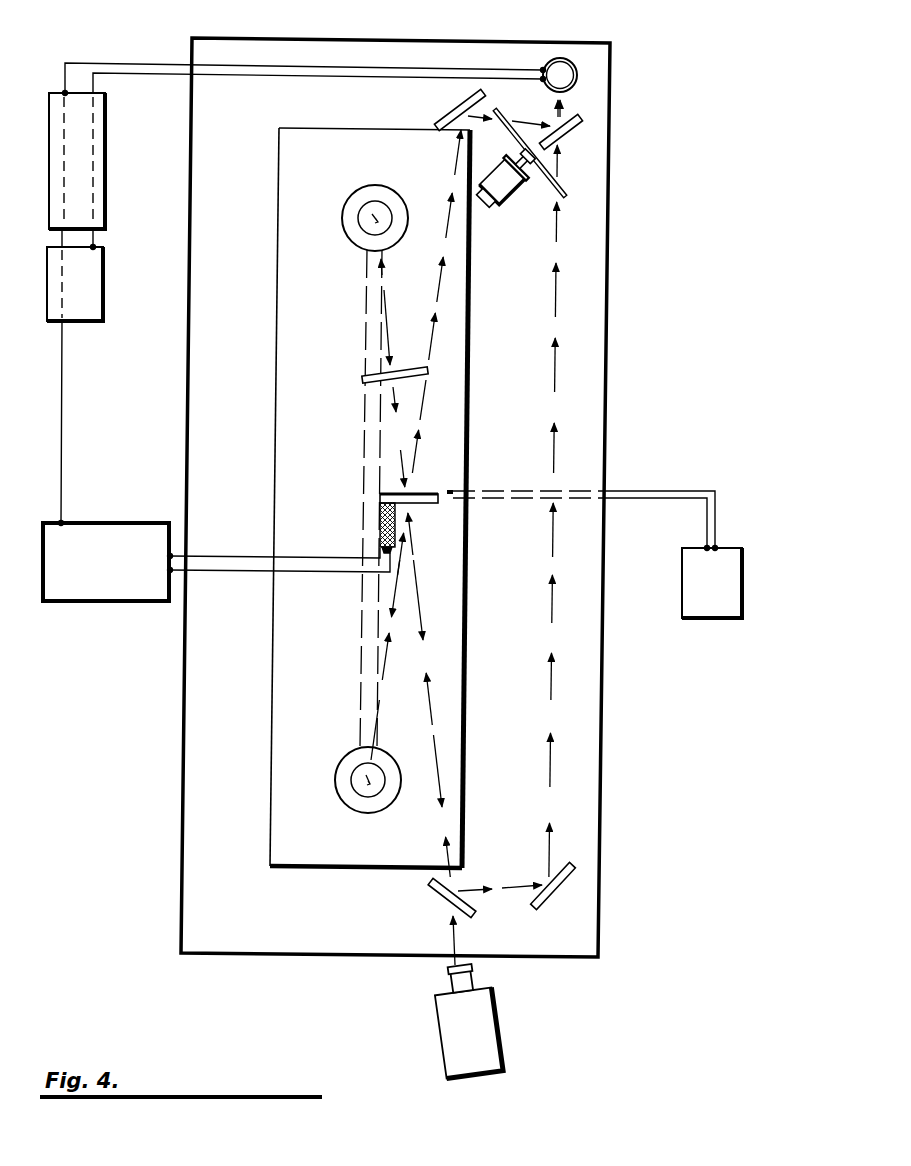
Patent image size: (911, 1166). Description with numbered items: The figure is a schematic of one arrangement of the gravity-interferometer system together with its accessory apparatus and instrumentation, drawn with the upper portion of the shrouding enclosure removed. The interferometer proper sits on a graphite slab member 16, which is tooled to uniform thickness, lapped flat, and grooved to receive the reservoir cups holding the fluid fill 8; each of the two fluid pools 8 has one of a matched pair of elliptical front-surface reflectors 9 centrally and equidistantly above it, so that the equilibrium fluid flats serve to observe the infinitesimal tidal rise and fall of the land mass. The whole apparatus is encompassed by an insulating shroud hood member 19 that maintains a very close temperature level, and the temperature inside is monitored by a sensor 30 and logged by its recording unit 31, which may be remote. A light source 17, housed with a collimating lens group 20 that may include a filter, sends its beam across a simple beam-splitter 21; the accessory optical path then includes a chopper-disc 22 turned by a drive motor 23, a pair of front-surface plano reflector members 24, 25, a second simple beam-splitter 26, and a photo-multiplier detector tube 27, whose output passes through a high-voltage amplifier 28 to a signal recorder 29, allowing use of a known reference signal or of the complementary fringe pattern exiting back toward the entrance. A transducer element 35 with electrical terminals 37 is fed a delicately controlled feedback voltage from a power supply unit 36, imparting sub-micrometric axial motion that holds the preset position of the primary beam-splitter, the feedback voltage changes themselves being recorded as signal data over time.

The fluid fill 8 is at (350, 798).
The front-surface reflectors 9 is at (372, 220).
The graphite slab member 16 is at (464, 735).
The light source 17 is at (456, 938).
The insulating shroud hood member 19 is at (181, 803).
The collimating lens group 20 is at (448, 985).
The simple beam-splitter 21 is at (442, 897).
The chopper-disc 22 is at (566, 197).
The drive motor 23 is at (513, 188).
The front-surface plano reflector member 24 is at (549, 899).
The front-surface plano reflector member 25 is at (447, 110).
The second simple beam-splitter 26 is at (573, 130).
The photo-multiplier detector tube 27 is at (556, 58).
The amplifier 28 is at (108, 147).
The signal recorder 29 is at (106, 283).
The sensor 30 is at (450, 490).
The recording unit 31 is at (745, 580).
The transducer element 35 is at (380, 537).
The power supply unit 36 is at (88, 601).
The electrical terminals 37 is at (386, 552).